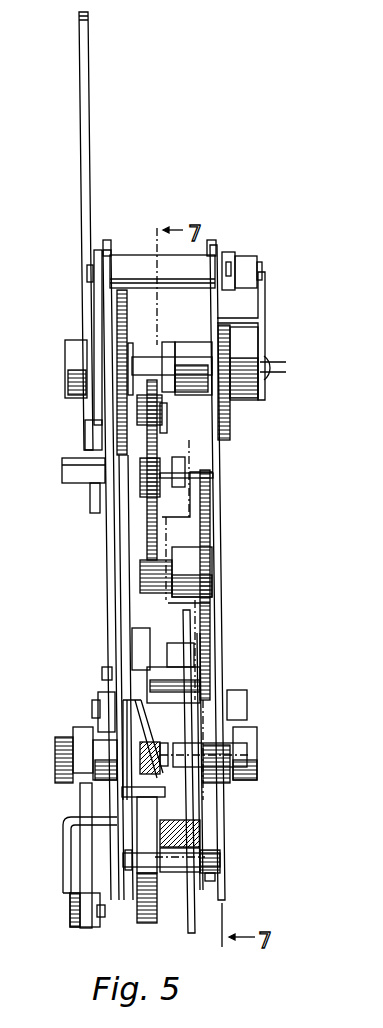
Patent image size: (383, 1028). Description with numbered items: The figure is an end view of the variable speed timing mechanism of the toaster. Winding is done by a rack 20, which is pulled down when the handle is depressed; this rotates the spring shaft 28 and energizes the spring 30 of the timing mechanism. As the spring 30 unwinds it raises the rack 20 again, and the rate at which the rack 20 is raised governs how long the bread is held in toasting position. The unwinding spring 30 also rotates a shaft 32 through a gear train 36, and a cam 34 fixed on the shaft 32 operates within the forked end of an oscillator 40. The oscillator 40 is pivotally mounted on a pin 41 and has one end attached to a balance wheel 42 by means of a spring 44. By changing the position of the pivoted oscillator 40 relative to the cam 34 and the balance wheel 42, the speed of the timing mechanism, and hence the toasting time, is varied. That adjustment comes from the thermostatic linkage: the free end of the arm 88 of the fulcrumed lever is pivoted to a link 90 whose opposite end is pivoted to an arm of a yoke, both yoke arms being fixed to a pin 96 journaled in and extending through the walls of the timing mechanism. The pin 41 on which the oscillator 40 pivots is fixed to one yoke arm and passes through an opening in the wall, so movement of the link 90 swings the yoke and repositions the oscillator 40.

The rack 20 is at (90, 132).
The spring shaft 28 is at (143, 363).
The spring 30 is at (255, 400).
The shaft 32 is at (157, 668).
The cam 34 is at (190, 648).
The gear train 36 is at (143, 352).
The oscillator 40 is at (199, 805).
The pin 41 is at (235, 740).
The balance wheel 42 is at (150, 925).
The spring 44 is at (210, 836).
The arm 88 is at (93, 927).
The link 90 is at (83, 877).
The pin 96 is at (167, 778).